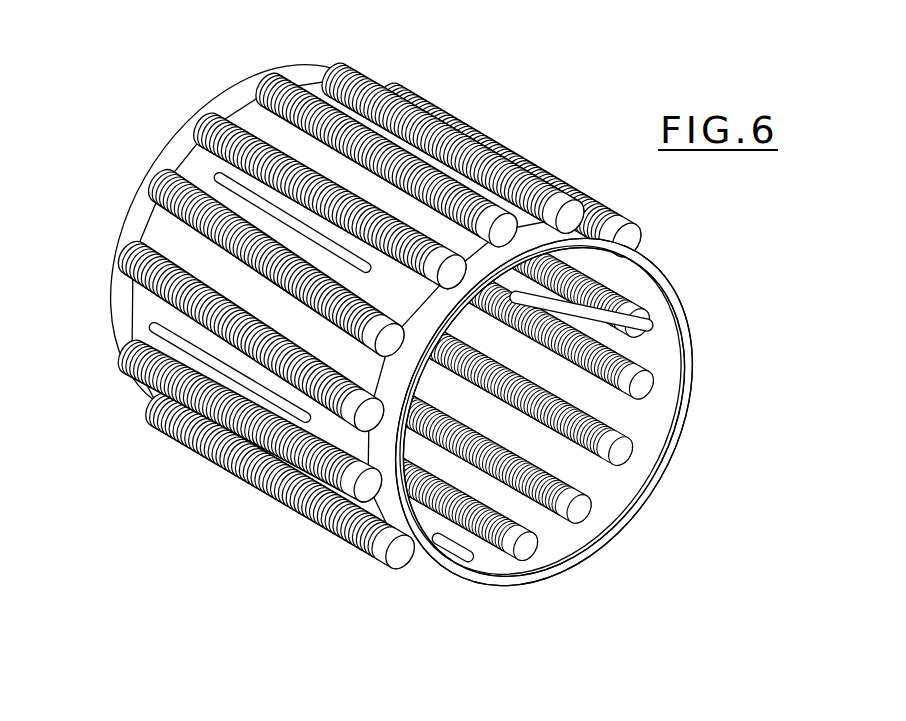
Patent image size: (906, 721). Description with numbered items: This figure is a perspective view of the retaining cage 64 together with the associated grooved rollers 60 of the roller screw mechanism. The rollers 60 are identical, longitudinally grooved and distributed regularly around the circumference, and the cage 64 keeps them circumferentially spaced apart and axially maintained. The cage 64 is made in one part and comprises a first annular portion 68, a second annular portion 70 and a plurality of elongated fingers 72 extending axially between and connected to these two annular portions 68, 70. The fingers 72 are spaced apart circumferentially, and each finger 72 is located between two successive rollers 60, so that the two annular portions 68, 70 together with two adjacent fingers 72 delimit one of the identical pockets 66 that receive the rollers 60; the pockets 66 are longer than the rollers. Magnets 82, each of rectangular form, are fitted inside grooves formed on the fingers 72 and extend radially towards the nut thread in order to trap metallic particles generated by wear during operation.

The grooved roller 60 is at (401, 325).
The retaining cage 64 is at (678, 259).
The pocket 66 is at (607, 450).
The first annular portion 68 is at (407, 373).
The second annular portion 70 is at (150, 168).
The elongated finger 72 is at (437, 213).
The magnet 82 is at (402, 100).